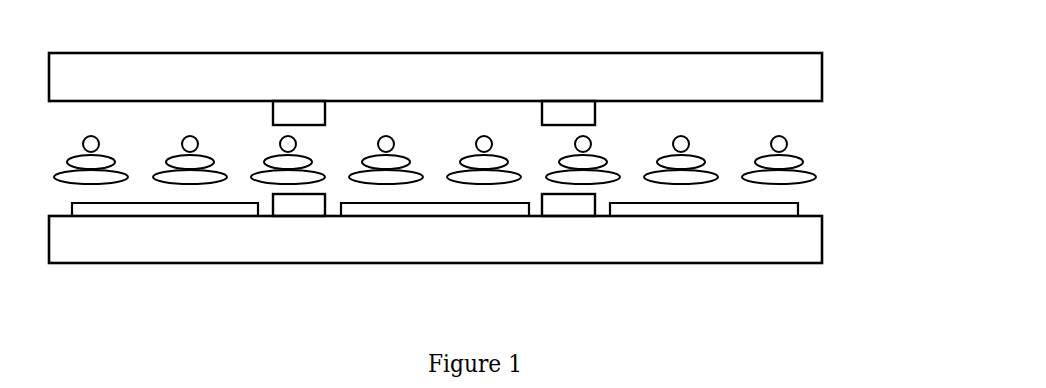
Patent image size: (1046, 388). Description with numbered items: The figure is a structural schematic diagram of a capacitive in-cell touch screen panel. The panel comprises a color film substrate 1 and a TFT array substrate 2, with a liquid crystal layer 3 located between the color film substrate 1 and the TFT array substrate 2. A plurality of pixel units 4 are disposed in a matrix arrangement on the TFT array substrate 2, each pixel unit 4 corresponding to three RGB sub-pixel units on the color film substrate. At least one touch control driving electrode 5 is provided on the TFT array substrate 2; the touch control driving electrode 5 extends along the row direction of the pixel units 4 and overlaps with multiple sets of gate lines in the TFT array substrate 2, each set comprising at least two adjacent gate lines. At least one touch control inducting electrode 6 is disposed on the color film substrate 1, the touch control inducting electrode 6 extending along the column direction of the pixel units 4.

The color film substrate 1 is at (466, 50).
The TFT array substrate 2 is at (465, 268).
The liquid crystal layer 3 is at (468, 145).
The pixel units 4 is at (435, 256).
The touch control driving electrode 5 is at (434, 252).
The touch control inducting electrode 6 is at (434, 69).